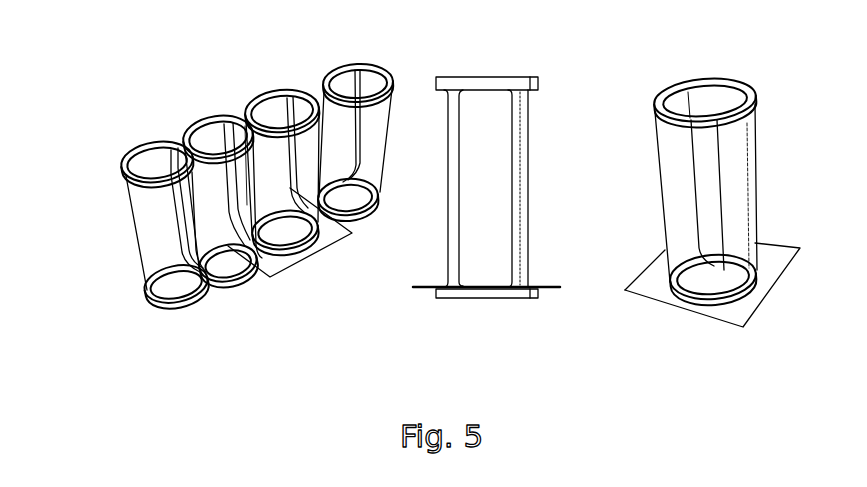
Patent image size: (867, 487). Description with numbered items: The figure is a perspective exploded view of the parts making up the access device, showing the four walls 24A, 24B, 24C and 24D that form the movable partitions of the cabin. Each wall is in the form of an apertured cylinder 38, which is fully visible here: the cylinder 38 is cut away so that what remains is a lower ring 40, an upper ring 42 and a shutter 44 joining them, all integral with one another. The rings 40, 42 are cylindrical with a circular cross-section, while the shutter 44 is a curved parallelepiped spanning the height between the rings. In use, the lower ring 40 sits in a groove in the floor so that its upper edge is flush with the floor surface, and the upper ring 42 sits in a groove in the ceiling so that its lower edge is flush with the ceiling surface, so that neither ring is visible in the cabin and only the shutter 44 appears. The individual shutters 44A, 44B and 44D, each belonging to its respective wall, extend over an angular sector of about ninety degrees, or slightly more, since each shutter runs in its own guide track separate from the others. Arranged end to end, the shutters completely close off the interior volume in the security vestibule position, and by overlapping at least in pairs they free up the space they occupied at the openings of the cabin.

The wall 24A is at (127, 200).
The wall 24B is at (222, 202).
The wall 24C is at (273, 107).
The wall 24D is at (371, 179).
The apertured cylinder 38 is at (131, 260).
The lower ring 40 is at (168, 315).
The upper ring 42 is at (152, 152).
The shutter 44 is at (273, 197).
The shutter 44A is at (160, 206).
The shutter 44B is at (212, 208).
The shutter 44D is at (358, 163).